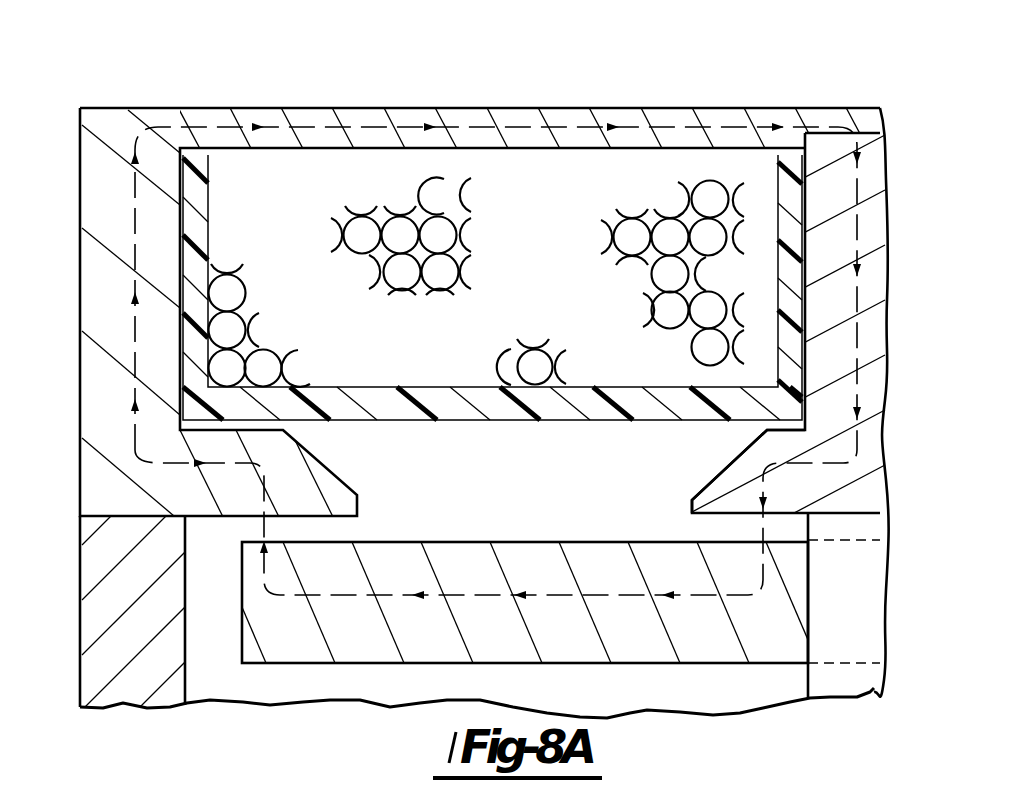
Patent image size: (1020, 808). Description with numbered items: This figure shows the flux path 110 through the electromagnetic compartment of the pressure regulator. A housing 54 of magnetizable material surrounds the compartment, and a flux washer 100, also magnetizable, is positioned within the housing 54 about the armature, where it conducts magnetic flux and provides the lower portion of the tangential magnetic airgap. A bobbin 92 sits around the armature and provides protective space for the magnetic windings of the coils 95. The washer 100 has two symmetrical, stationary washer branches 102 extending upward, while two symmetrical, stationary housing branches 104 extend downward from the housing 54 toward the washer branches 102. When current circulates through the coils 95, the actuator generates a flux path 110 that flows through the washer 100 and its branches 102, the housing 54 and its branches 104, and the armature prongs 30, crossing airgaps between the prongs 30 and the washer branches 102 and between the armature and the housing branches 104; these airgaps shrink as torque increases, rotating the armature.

The housing 54 is at (60, 162).
The flux path 110 is at (556, 112).
The flux washer 100 is at (838, 178).
The coils 95 is at (670, 272).
The housing branches 104 is at (285, 452).
The bobbin 92 is at (512, 410).
The washer branches 102 is at (745, 462).
The armature prongs 30 is at (283, 625).